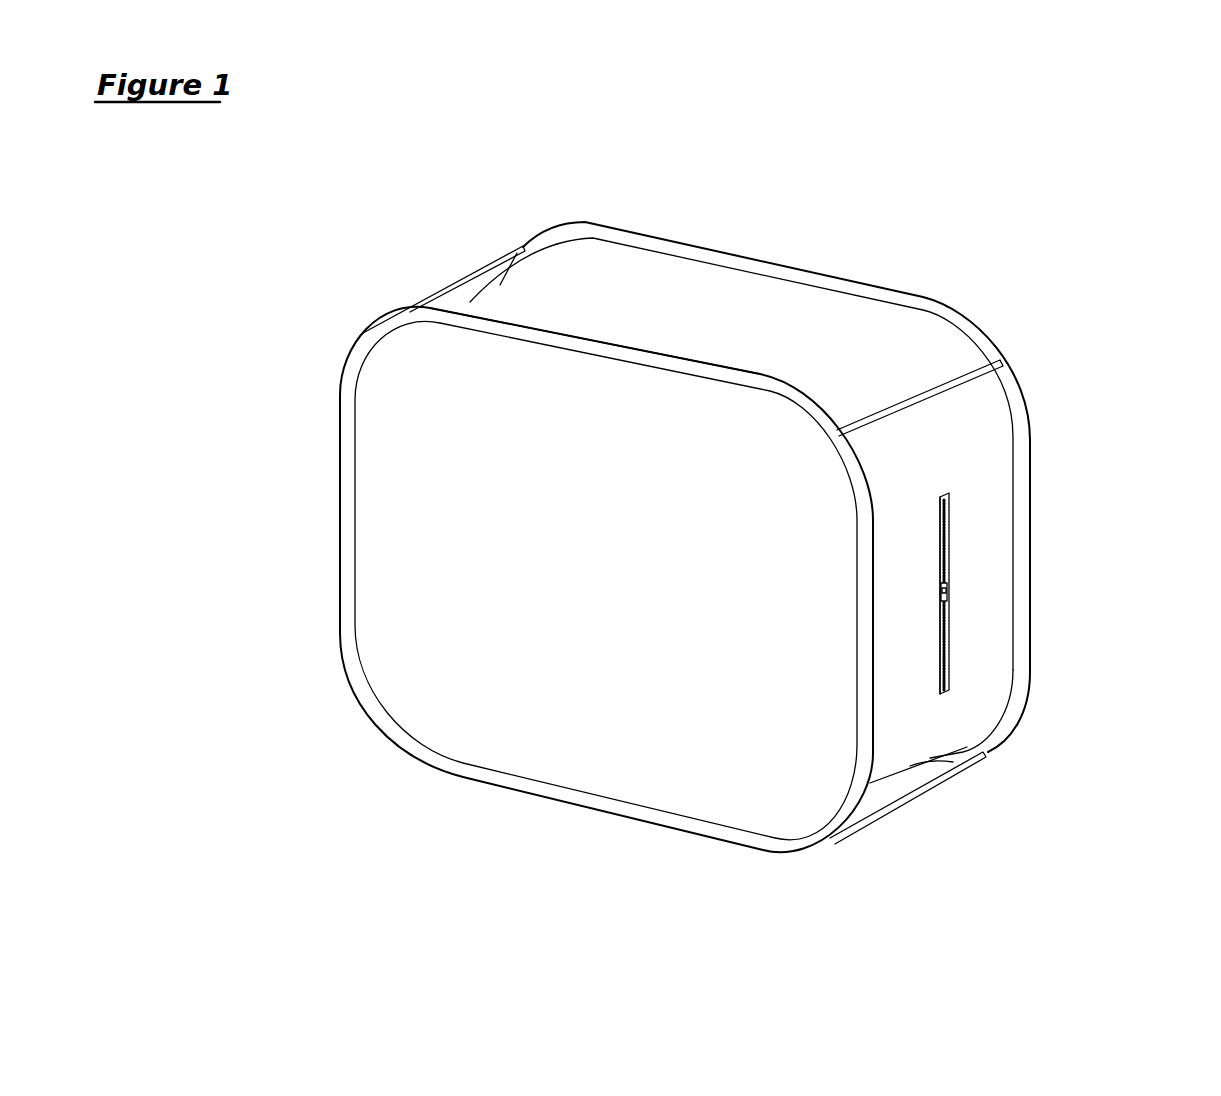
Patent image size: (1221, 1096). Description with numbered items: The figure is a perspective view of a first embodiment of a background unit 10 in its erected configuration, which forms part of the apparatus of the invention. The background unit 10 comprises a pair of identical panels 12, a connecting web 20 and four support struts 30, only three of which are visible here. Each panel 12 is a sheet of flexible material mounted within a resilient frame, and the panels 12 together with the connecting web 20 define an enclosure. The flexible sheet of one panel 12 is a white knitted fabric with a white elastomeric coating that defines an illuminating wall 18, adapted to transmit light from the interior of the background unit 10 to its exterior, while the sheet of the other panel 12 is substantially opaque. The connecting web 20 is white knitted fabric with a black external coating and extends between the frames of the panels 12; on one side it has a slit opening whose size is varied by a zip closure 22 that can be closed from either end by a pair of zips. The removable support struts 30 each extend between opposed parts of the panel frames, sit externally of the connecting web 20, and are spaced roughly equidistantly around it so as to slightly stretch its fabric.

The background unit 10 is at (1114, 253).
The panel 12 is at (376, 452).
The illuminating wall 18 is at (487, 703).
The connecting web 20 is at (630, 280).
The zip closure 22 is at (945, 663).
The support strut 30 is at (467, 278).